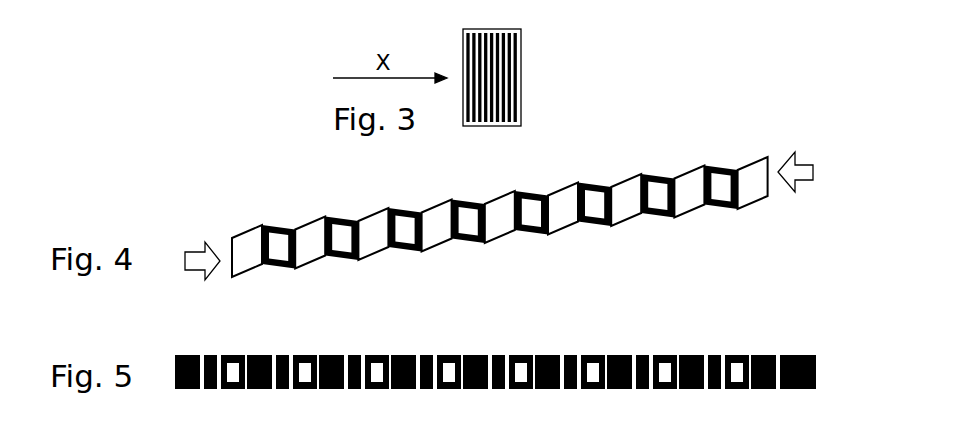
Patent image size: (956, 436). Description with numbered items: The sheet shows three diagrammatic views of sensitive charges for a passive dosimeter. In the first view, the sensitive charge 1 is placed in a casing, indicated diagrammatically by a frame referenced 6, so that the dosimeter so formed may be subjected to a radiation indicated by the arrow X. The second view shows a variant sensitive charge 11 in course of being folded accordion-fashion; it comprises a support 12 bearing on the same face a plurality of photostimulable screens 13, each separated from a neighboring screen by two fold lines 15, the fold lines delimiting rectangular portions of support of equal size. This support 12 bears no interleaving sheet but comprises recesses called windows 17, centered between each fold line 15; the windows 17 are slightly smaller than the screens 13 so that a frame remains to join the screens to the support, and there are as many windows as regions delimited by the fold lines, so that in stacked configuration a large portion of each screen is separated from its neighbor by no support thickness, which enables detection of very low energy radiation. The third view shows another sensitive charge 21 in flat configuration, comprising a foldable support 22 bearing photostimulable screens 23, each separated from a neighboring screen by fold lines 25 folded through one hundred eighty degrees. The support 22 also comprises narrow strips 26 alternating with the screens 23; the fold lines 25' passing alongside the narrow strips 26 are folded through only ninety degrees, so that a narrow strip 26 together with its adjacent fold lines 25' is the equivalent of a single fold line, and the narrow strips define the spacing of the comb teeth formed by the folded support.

In FIG. 3, the sensitive charge 1 is at (521, 79).
In FIG. 3, the casing 6 is at (488, 127).
In FIG. 4, the sensitive charge 11 is at (722, 142).
In FIG. 4, the support 12 is at (733, 209).
In FIG. 4, the photostimulable screens 13 is at (372, 236).
In FIG. 4, the fold line 15 is at (580, 183).
In FIG. 4, the windows 17 is at (283, 231).
In FIG. 5, the sensitive charge 21 is at (201, 421).
In FIG. 5, the foldable support 22 is at (184, 356).
In FIG. 5, the photostimulable screens 23 is at (305, 378).
In FIG. 5, the fold line 25 is at (569, 342).
In FIG. 5, the fold lines 25' is at (646, 340).
In FIG. 5, the narrow strips 26 is at (785, 357).